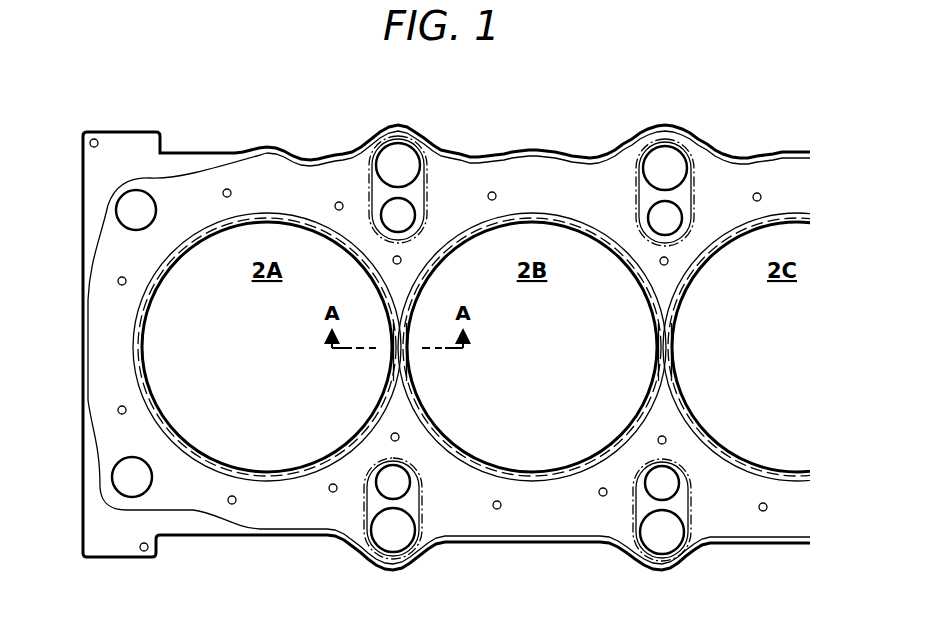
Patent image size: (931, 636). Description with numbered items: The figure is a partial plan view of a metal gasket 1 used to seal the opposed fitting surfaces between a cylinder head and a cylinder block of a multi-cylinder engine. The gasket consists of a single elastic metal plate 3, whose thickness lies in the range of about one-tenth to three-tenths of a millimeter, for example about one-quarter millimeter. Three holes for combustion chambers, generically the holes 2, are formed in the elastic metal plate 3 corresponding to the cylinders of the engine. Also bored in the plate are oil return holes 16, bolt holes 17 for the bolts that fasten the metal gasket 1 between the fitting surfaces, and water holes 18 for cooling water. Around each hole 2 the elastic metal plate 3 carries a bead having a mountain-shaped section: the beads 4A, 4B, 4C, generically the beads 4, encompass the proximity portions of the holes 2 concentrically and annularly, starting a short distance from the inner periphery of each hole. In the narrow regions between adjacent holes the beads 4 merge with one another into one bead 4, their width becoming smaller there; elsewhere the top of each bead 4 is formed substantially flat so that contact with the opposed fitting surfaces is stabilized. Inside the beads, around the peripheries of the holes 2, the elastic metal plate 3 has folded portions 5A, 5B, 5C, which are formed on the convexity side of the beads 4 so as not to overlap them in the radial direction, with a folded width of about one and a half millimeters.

The metal gasket 1 is at (755, 148).
The holes for combustion chamber 2 is at (145, 362).
The elastic metal plate 3 is at (100, 330).
The bead 4 is at (408, 330).
The bead 4A is at (260, 213).
The bead 4B is at (519, 212).
The bead 4C is at (786, 218).
The folded portion 5A is at (187, 448).
The folded portion 5B is at (525, 480).
The folded portion 5C is at (757, 470).
The oil return holes 16 is at (157, 198).
The bolt holes 17 is at (227, 189).
The water holes 18 is at (398, 143).